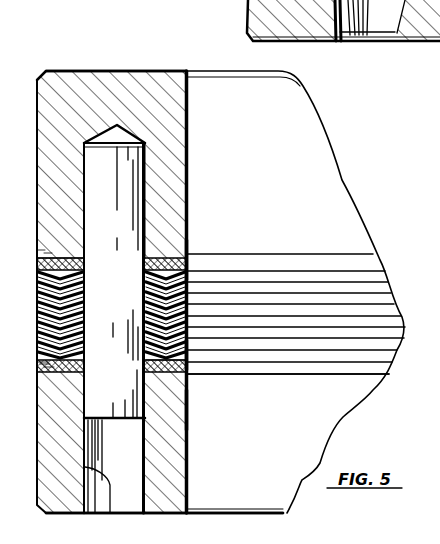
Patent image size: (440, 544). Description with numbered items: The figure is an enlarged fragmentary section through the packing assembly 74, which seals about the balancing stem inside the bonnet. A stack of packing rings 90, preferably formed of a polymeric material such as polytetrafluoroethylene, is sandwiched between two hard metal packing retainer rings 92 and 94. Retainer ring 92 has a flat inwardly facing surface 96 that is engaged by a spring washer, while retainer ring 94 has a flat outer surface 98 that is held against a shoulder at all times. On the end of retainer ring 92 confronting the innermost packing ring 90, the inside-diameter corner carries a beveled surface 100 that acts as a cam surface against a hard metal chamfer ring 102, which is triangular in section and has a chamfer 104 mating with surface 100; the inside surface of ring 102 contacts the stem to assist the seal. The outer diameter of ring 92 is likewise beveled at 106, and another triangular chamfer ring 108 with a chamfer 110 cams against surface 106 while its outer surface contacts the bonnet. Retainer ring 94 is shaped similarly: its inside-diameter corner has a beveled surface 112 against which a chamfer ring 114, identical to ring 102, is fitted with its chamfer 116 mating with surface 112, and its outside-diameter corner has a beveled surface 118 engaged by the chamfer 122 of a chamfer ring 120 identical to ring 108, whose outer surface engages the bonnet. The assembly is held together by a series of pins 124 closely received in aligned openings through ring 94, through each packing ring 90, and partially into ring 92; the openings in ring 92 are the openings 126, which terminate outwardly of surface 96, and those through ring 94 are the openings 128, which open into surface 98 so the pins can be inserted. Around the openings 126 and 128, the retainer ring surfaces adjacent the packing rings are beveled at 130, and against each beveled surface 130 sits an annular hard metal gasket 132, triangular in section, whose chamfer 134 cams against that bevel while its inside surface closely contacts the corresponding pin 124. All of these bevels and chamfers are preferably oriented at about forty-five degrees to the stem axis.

The packing assembly 74 is at (77, 59).
The packing rings 90 is at (312, 292).
The packing retainer ring 92 is at (48, 71).
The packing retainer ring 94 is at (53, 514).
The inwardly facing surface 96 is at (123, 70).
The outer surface 98 is at (165, 515).
The beveled surface 100 is at (187, 262).
The chamfer ring 102 is at (278, 265).
The chamfer 104 is at (173, 258).
The beveled surface 106 is at (44, 256).
The chamfer ring 108 is at (39, 252).
The chamfer 110 is at (44, 253).
The beveled surface 112 is at (187, 355).
The chamfer ring 114 is at (270, 370).
The chamfer 116 is at (188, 405).
The beveled surface 118 is at (45, 363).
The chamfer ring 120 is at (50, 367).
The chamfer 122 is at (40, 362).
The pins 124 is at (127, 160).
The openings 126 is at (83, 175).
The openings 128 is at (104, 514).
The beveled surface 130 is at (83, 268).
The gasket 132 is at (142, 270).
The chamfer 134 is at (75, 258).